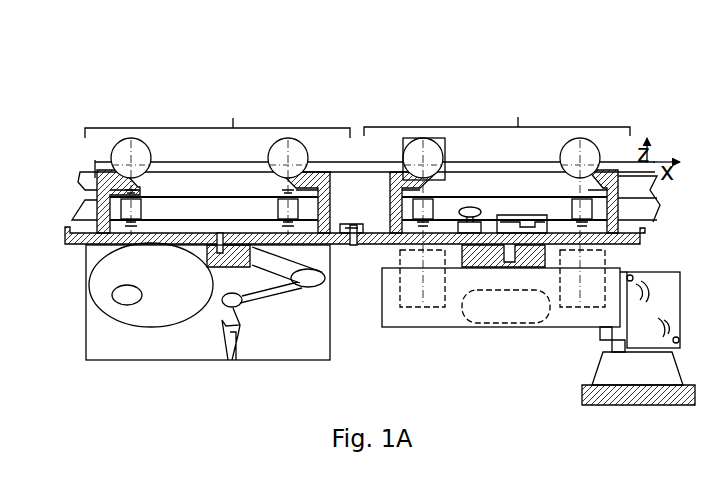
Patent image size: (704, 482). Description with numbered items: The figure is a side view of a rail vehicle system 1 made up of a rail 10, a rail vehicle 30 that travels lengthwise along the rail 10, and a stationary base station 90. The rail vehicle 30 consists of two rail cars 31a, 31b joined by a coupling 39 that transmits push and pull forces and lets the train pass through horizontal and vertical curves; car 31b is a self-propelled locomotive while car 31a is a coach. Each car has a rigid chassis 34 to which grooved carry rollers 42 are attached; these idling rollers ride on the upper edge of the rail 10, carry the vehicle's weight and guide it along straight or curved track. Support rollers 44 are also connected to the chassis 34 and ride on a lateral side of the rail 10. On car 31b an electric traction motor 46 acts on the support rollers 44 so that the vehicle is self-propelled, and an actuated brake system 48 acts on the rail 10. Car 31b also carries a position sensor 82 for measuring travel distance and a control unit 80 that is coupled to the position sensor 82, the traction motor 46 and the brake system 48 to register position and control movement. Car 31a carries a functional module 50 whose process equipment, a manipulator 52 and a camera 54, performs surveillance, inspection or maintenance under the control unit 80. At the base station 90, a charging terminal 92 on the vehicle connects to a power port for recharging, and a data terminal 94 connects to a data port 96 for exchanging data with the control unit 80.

The rail vehicle system 1 is at (153, 80).
The rail 10 is at (90, 180).
The rail vehicle 30 is at (63, 222).
The rail car 31a is at (198, 390).
The rail car 31b is at (490, 337).
The chassis 34 is at (397, 178).
The coupling 39 is at (353, 252).
The carry roller 42 is at (137, 148).
The support roller 44 is at (133, 200).
The electric traction motor 46 is at (410, 260).
The actuated brake system 48 is at (515, 218).
The functional module 50 is at (137, 360).
The manipulator 52 is at (242, 345).
The camera 54 is at (115, 310).
The control unit 80 is at (499, 330).
The position sensor 82 is at (469, 208).
The base station 90 is at (620, 375).
The charging terminal 92 is at (602, 347).
The data terminal 94 is at (632, 272).
The data port 96 is at (642, 350).